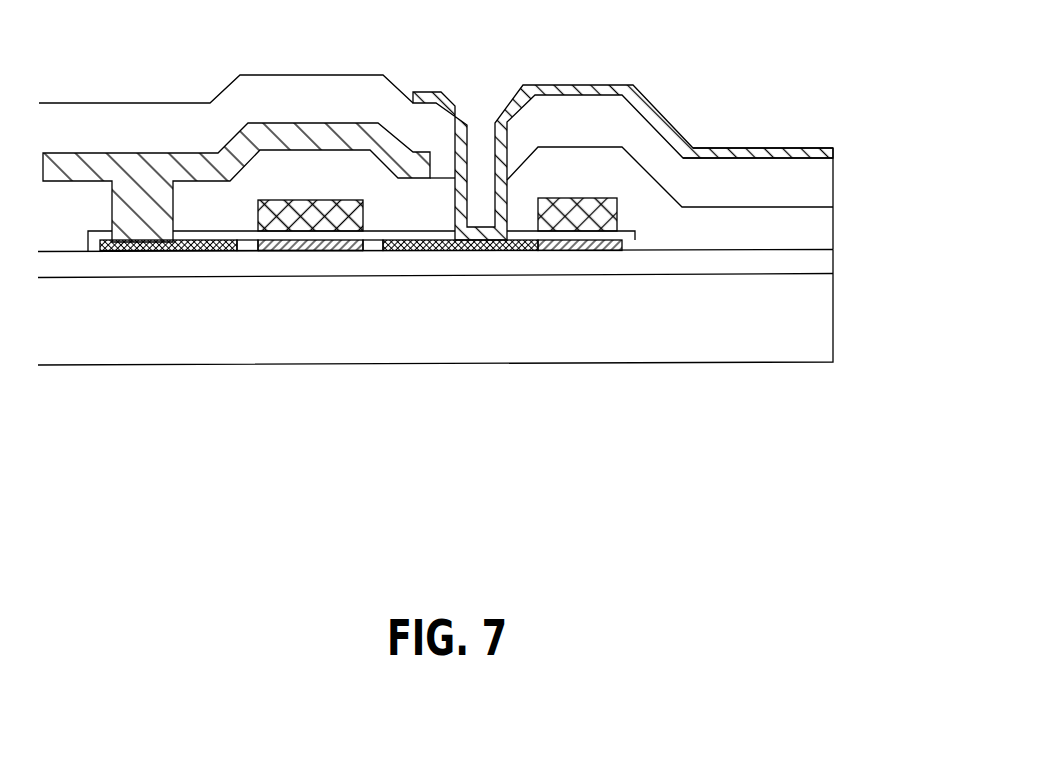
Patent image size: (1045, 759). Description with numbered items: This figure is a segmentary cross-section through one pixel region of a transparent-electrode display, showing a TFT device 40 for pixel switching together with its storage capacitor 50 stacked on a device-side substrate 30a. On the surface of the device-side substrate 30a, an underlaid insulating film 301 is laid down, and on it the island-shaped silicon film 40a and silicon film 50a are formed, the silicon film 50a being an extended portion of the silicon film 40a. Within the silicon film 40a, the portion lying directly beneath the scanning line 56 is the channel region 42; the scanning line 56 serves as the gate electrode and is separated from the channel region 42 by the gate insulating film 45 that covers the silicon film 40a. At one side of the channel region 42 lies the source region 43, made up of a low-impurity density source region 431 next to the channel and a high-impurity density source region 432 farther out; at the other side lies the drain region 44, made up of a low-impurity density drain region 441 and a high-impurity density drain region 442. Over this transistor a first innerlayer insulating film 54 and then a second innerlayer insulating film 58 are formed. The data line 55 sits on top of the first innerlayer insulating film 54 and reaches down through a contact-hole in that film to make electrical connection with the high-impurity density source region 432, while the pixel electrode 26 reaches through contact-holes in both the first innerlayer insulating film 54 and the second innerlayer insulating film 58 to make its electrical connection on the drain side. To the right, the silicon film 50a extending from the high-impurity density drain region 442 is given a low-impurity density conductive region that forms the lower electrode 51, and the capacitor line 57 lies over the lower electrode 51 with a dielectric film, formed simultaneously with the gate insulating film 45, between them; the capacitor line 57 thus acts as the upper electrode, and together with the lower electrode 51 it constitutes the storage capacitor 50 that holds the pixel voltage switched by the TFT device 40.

The pixel electrode 26 is at (755, 143).
The device-side substrate 30a is at (820, 335).
The underlaid insulating film 301 is at (818, 263).
The TFT device for pixel switching 40 is at (308, 371).
The silicon film 40a is at (300, 250).
The channel region 42 is at (337, 243).
The source region 43 is at (172, 365).
The low-impurity density source region 431 is at (248, 243).
The high-impurity density source region 432 is at (210, 250).
The drain region 44 is at (450, 365).
The low-impurity density drain region 441 is at (373, 245).
The high-impurity density drain region 442 is at (408, 245).
The gate insulating film 45 is at (635, 240).
The storage capacitor 50 is at (469, 304).
The silicon film 50a is at (492, 265).
The lower electrode 51 is at (607, 250).
The first innerlayer insulating film 54 is at (563, 157).
The data line 55 is at (183, 167).
The scanning line 56 is at (292, 200).
The capacitor line 57 is at (613, 217).
The second innerlayer insulating film 58 is at (598, 113).